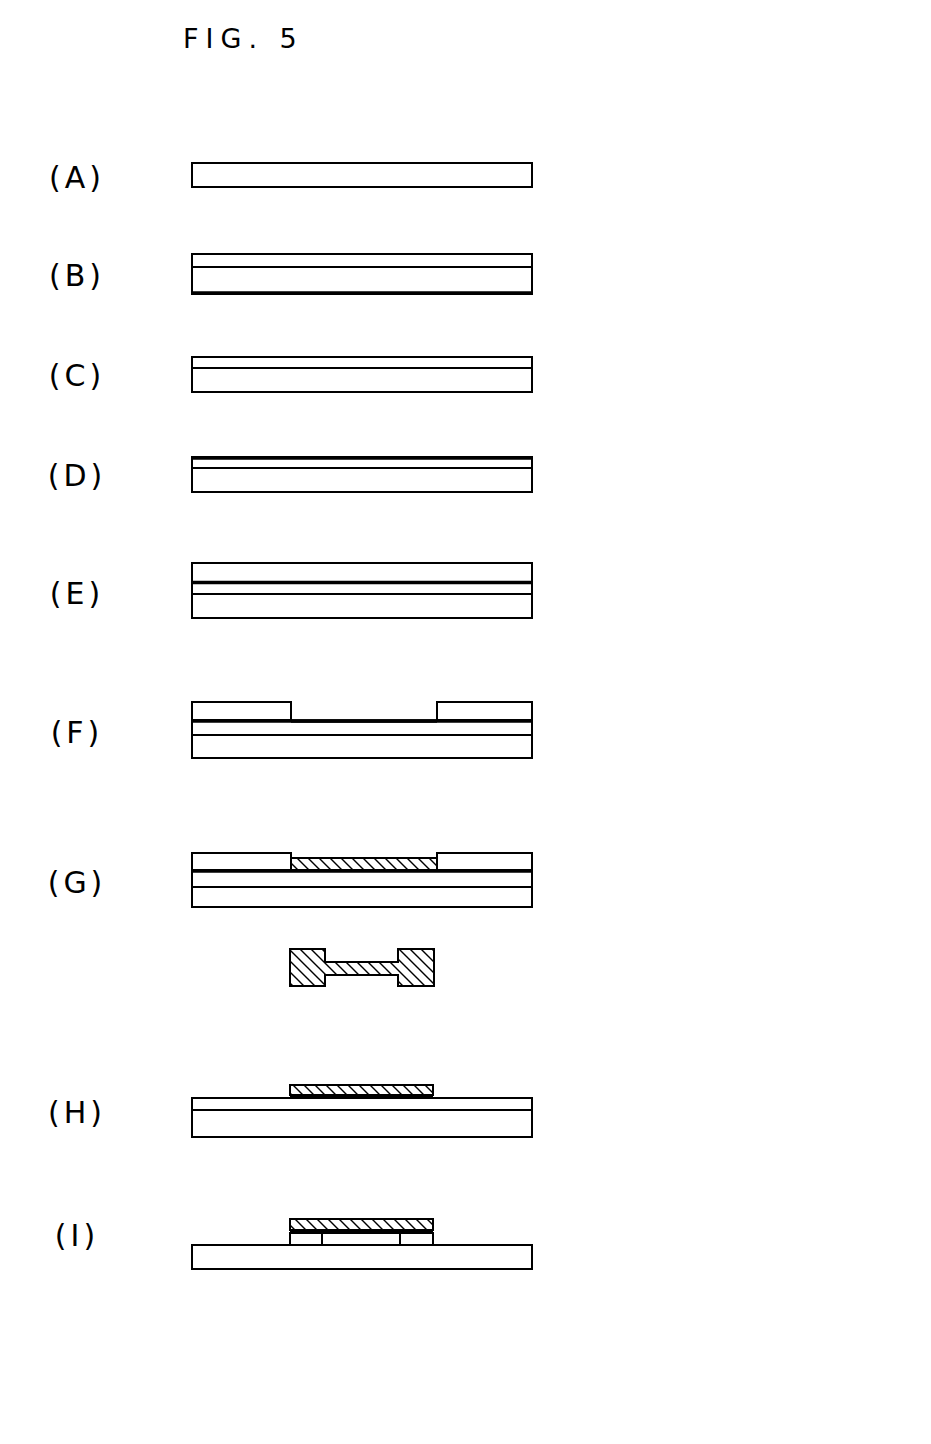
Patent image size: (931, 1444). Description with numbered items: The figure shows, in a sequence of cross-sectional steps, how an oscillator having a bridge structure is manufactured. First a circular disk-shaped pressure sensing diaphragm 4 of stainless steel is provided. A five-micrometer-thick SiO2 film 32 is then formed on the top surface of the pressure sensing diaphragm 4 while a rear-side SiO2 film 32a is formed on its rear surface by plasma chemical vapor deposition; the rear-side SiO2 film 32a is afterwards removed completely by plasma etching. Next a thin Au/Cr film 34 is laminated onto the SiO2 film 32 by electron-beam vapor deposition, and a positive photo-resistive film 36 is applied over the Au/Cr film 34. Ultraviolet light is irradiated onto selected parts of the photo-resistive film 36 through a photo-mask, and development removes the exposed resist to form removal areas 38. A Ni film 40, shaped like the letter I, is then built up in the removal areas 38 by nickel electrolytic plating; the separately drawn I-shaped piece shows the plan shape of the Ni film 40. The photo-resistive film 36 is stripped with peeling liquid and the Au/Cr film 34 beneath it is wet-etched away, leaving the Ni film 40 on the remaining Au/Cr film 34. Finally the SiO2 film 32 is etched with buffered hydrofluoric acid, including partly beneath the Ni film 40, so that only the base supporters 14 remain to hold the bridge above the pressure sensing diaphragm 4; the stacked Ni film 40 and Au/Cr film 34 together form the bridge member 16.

The pressure sensing diaphragm 4 is at (500, 170).
The SiO2 film 32 is at (498, 258).
The rear-side SiO2 film 32a is at (510, 294).
The Au/Cr film 34 is at (497, 458).
The photo-resistive film 36 is at (505, 570).
The removal areas 38 is at (368, 715).
The Ni film 40 is at (370, 858).
The base supporters 14 is at (432, 1240).
The wiring conductor 16 is at (495, 1155).